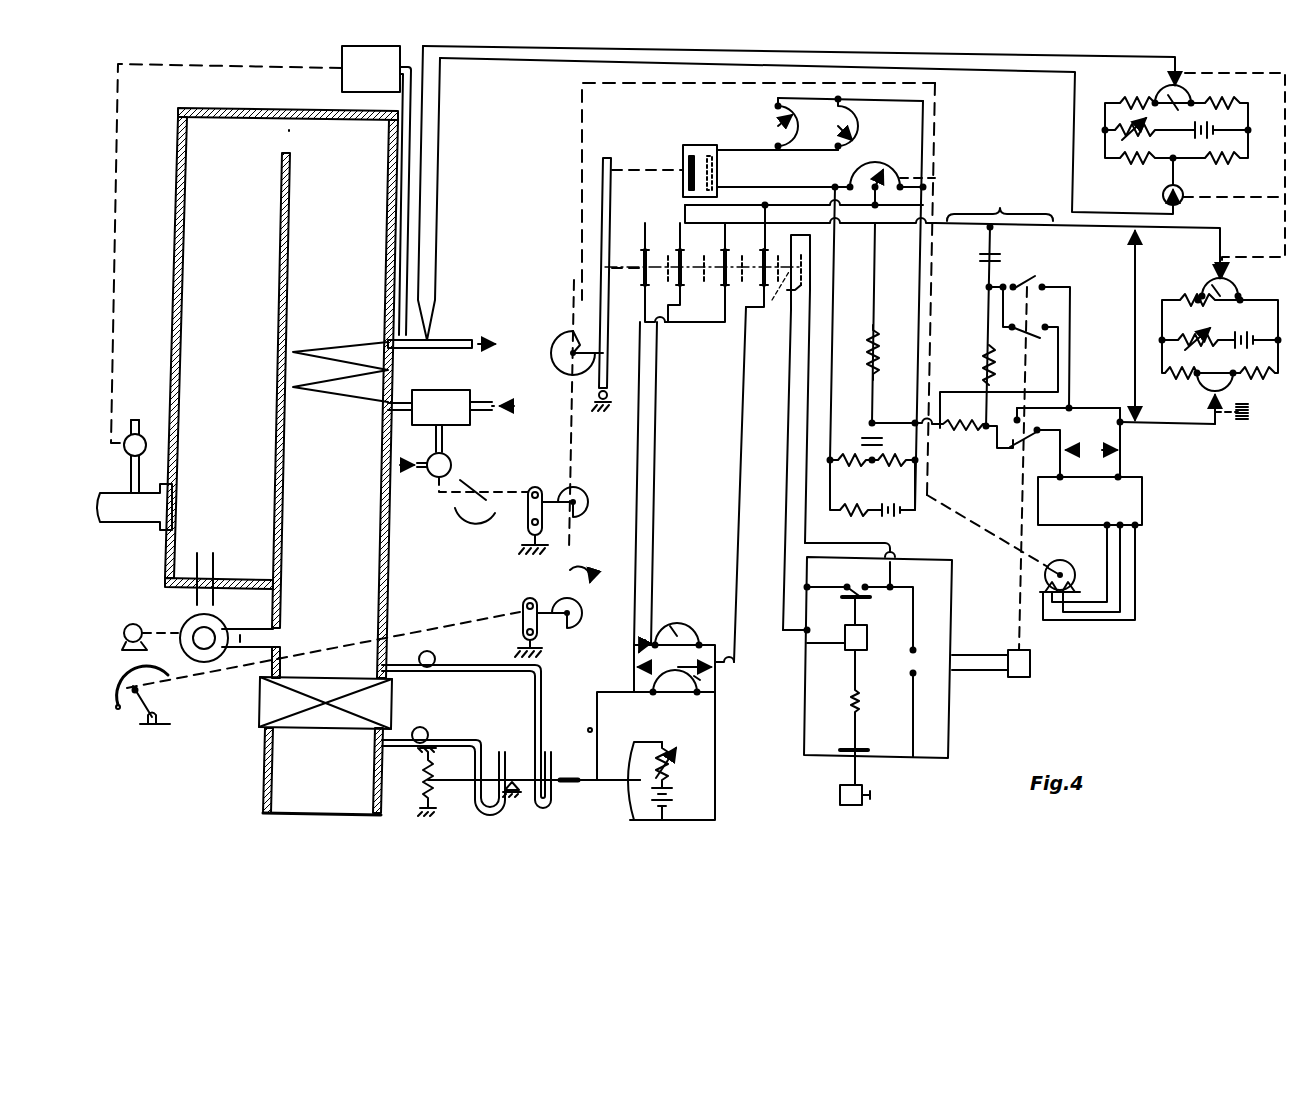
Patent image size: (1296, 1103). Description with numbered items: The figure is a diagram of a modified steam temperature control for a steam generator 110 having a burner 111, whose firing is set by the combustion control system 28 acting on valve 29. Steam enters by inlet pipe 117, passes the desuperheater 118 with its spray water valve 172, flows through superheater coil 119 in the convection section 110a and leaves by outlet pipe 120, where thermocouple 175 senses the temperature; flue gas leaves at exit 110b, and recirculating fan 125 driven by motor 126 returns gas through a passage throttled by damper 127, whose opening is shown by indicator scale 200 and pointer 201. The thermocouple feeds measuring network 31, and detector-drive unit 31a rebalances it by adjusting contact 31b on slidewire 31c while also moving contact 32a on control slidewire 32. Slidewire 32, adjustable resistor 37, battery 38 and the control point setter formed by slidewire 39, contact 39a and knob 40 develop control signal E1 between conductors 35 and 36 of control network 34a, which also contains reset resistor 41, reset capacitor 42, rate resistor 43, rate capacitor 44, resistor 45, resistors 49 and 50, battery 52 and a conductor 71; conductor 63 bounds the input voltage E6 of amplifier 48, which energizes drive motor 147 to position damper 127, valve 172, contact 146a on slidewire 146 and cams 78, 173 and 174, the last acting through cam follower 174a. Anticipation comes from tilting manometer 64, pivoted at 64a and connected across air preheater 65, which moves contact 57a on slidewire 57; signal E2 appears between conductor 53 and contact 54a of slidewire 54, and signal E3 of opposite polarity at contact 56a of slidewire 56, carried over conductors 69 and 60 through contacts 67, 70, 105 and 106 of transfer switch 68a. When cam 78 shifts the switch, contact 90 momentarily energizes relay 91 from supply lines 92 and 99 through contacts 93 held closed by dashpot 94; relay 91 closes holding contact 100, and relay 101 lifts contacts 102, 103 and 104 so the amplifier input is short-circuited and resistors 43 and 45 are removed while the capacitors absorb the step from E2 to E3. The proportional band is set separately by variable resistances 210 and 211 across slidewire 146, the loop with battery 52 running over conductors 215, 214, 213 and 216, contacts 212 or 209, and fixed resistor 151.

The combustion control system 28 is at (384, 82).
The valve 29 is at (141, 434).
The balanceable measuring network 31 is at (1130, 189).
The detector-drive unit 31a is at (1184, 192).
The contact 31b is at (1168, 84).
The slidewire 31c is at (1177, 110).
The control slidewire 32 is at (1220, 336).
The contact 32a is at (1216, 278).
The control network 34a is at (1016, 207).
The conductor 35 is at (1100, 228).
The conductor 36 is at (1155, 426).
The adjustable resistor 37 is at (1192, 334).
The battery 38 is at (1245, 334).
The slidewire 39 is at (1232, 384).
The adjustable contact 39a is at (1212, 402).
The knob 40 is at (1243, 422).
The reset resistor 41 is at (886, 352).
The reset capacitor 42 is at (862, 438).
The rate resistor 43 is at (963, 420).
The rate capacitor 44 is at (979, 258).
The resistor 45 is at (985, 362).
The amplifier 48 is at (1142, 495).
The resistor 49 is at (850, 466).
The resistor 50 is at (893, 466).
The battery 52 is at (902, 514).
The conductor 53 is at (636, 443).
The slidewire 54 is at (690, 626).
The contact 54a is at (678, 625).
The slidewire 56 is at (666, 690).
The contact 56a is at (700, 680).
The slidewire 57 is at (634, 756).
The movable contact 57a is at (636, 784).
The conductor 60 is at (742, 440).
The conductor 63 is at (997, 445).
The tilting manometer 64 is at (522, 753).
The pivot 64a is at (510, 784).
The air preheater 65 is at (262, 712).
The contact 67 is at (678, 252).
The transfer switch 68a is at (718, 322).
The conductor 69 is at (656, 410).
The contact 70 is at (643, 252).
The conductor 71 is at (874, 250).
The cam 78 is at (562, 334).
The contact 90 is at (791, 296).
The relay 91 is at (867, 642).
The supply line 92 is at (915, 676).
The contacts 93 is at (866, 748).
The dashpot 94 is at (862, 787).
The supply line 99 is at (915, 648).
The contact 100 is at (848, 592).
The relay 101 is at (1030, 664).
The contact 102 is at (1034, 436).
The contact 103 is at (999, 357).
The contact 104 is at (1022, 284).
The contact 105 is at (722, 252).
The contact 106 is at (762, 252).
The steam generator 110 is at (235, 377).
The convection section 110a is at (357, 477).
The exit 110b is at (345, 787).
The burner 111 is at (168, 512).
The inlet pipe 117 is at (484, 411).
The desuperheater 118 is at (456, 390).
The superheater coil 119 is at (334, 343).
The outlet pipe 120 is at (458, 342).
The recirculating fan 125 is at (192, 620).
The motor 126 is at (128, 624).
The damper 127 is at (240, 638).
The slidewire 146 is at (850, 176).
The contact 146a is at (878, 172).
The drive motor 147 is at (1085, 556).
The fixed resistor 151 is at (851, 499).
The spray water valve 172 is at (452, 464).
The cam 173 is at (585, 494).
The cam 174 is at (580, 606).
The cam follower 174a is at (524, 604).
The thermocouple 175 is at (433, 338).
The indicator scale 200 is at (134, 681).
The pointer 201 is at (142, 706).
The contacts 209 is at (716, 150).
The variable resistance 210 is at (792, 134).
The variable resistance 211 is at (852, 128).
The contacts 212 is at (683, 160).
The conductor 213 is at (738, 187).
The conductor 214 is at (930, 120).
The conductor 215 is at (921, 240).
The conductor 216 is at (852, 323).
The control signal E1 is at (1132, 325).
The control signal E2 is at (647, 635).
The control signal E3 is at (674, 669).
The input voltage E6 is at (1091, 453).